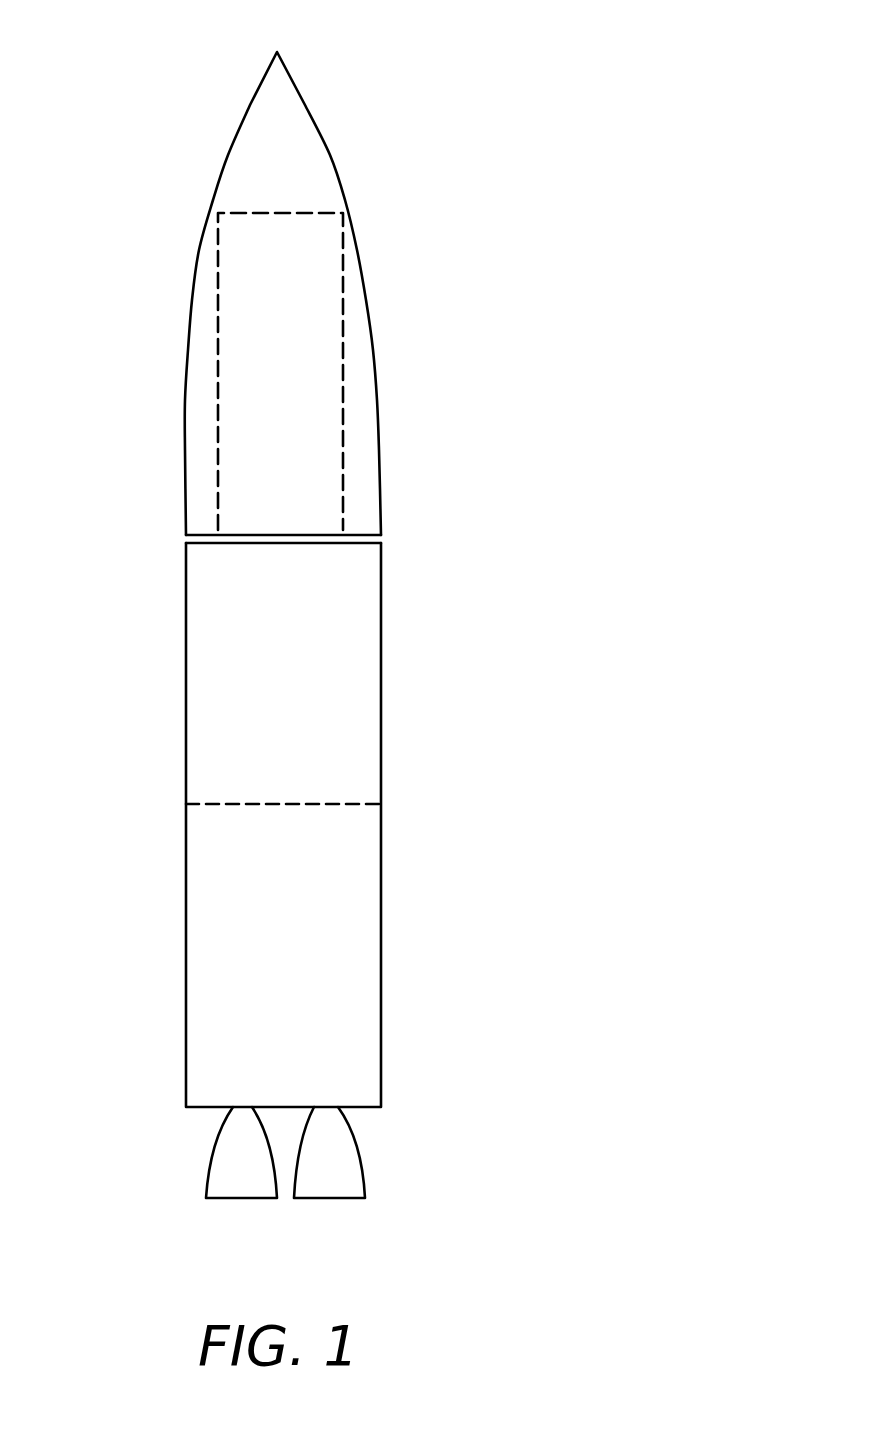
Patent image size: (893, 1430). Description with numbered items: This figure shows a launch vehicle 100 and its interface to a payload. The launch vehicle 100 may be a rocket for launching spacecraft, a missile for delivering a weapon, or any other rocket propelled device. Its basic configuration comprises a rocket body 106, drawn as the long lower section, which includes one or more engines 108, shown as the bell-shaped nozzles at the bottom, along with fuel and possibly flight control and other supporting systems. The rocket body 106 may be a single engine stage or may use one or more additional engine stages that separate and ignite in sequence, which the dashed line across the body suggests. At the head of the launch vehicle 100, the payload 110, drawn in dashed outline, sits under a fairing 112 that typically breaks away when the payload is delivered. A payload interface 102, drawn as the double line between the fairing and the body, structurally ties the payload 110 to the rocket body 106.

The launch vehicle 100 is at (322, 607).
The payload interface 102 is at (186, 540).
The rocket body 106 is at (381, 750).
The engines 108 is at (384, 1178).
The payload 110 is at (336, 312).
The fairing 112 is at (215, 195).